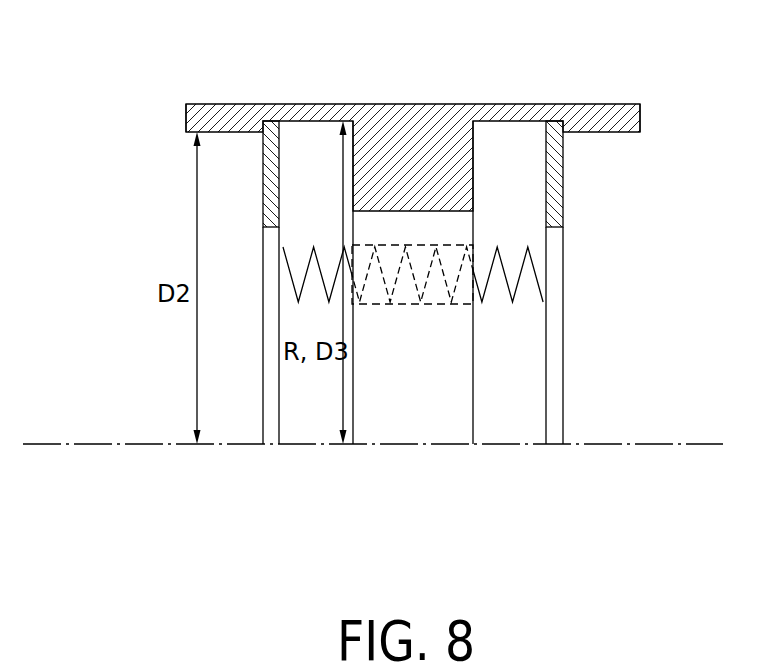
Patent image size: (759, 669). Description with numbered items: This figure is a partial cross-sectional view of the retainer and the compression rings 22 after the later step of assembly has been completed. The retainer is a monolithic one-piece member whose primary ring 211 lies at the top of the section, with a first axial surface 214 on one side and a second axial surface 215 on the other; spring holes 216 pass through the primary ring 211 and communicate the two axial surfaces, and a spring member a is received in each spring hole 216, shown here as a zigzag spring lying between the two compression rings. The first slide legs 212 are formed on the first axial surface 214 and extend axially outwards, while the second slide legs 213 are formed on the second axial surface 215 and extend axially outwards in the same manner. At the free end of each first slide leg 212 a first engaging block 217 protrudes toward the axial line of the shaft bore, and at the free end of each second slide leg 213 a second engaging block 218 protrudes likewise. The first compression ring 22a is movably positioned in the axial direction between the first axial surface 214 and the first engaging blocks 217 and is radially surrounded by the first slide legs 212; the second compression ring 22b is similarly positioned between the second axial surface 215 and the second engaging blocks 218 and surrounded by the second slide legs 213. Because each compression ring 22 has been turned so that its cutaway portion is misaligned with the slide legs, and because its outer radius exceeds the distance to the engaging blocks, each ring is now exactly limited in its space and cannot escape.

The primary ring 211 is at (411, 104).
The first slide legs 212 is at (289, 107).
The second slide legs 213 is at (537, 105).
The first axial surface 214 is at (353, 168).
The second axial surface 215 is at (473, 171).
The spring holes 216 is at (433, 304).
The first engaging block 217 is at (186, 132).
The second engaging block 218 is at (612, 133).
The spring member a is at (520, 275).
The compression ring 22 is at (413, 405).
The first compression ring 22a is at (270, 433).
The second compression ring 22b is at (556, 436).